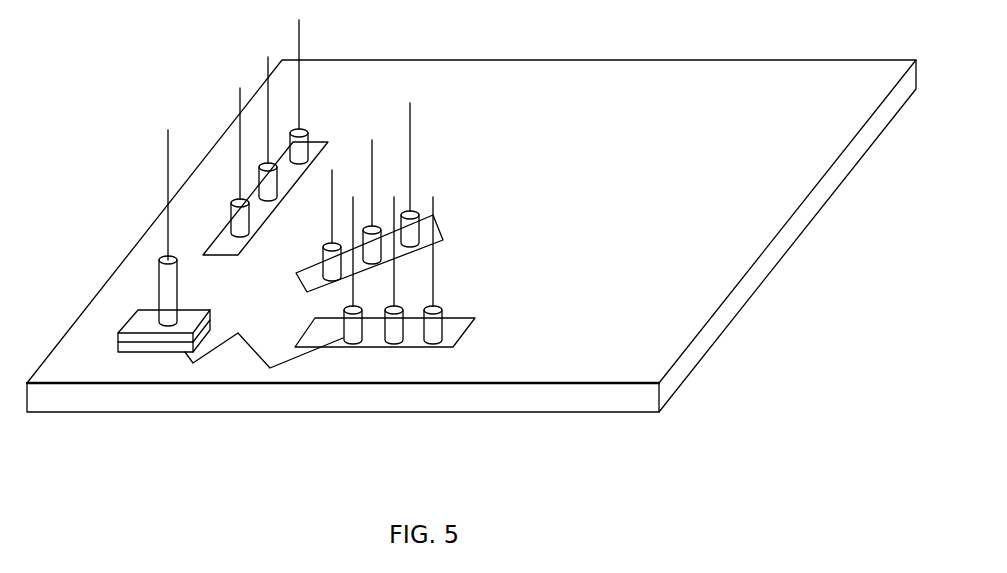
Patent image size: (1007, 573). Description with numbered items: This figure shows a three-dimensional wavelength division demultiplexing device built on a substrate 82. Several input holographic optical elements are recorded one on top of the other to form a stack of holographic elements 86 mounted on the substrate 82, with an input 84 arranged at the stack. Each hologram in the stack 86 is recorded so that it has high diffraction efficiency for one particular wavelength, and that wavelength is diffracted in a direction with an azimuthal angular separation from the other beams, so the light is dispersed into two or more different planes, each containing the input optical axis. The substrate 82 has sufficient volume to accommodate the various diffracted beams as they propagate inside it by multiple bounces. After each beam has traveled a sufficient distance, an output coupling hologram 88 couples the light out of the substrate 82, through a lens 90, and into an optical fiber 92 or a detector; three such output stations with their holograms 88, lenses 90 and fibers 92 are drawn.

The substrate 82 is at (471, 236).
The ground pin 84 is at (154, 228).
The stack of holographic elements 86 is at (146, 332).
The output coupling hologram 88 is at (355, 247).
The lens 90 is at (352, 228).
The optical fiber 92 is at (340, 163).